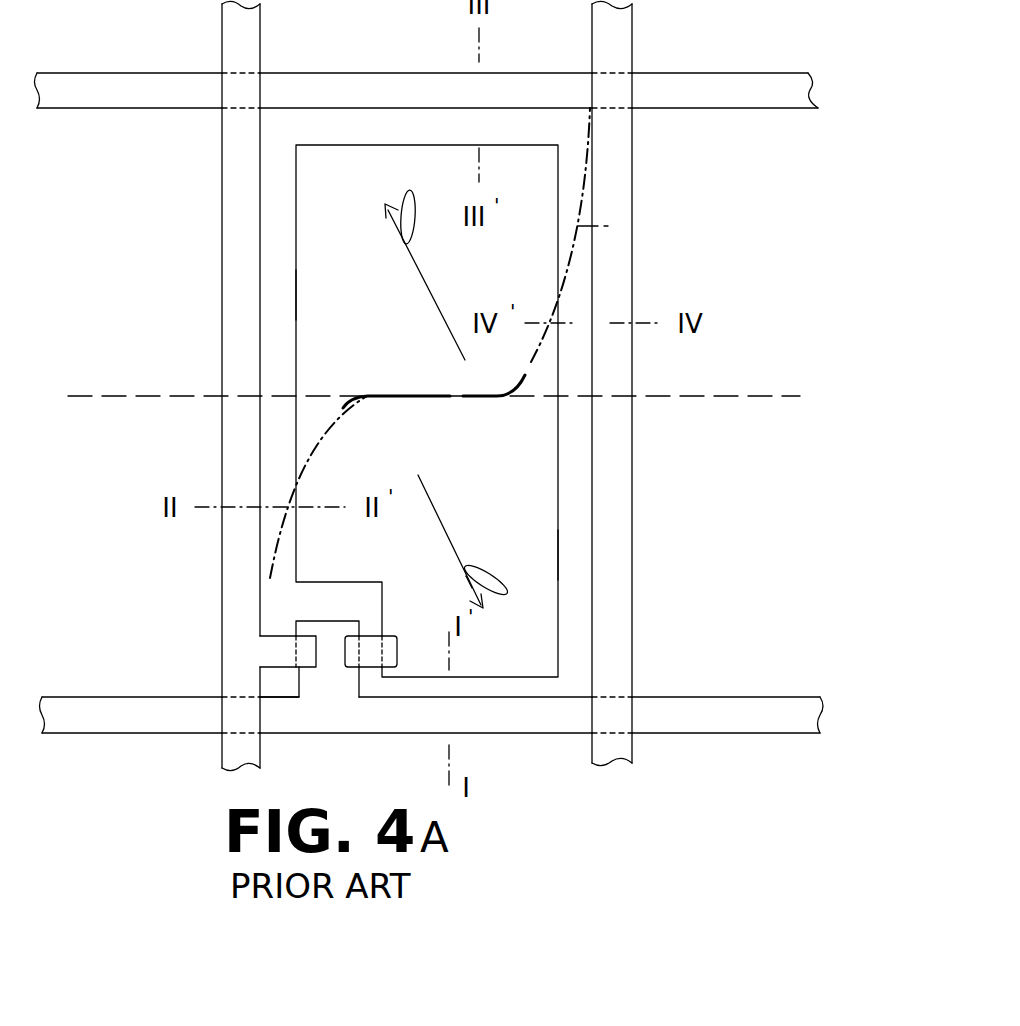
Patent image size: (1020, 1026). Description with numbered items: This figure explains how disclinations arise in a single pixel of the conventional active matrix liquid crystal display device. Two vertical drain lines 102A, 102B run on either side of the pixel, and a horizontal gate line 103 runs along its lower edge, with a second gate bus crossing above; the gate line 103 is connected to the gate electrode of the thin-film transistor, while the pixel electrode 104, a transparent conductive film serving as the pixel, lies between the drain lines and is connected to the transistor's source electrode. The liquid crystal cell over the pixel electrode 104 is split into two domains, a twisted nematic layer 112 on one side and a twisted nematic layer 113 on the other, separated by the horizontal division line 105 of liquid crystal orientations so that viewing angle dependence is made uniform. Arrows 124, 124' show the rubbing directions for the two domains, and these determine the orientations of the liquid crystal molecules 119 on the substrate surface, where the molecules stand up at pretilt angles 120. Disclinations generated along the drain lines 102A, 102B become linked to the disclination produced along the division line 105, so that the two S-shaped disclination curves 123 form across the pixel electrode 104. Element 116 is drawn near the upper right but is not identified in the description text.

The drain line 102A is at (224, 763).
The drain line 102B is at (633, 750).
The gate line 103 is at (107, 705).
The pixel electrode 104 is at (347, 165).
The division line 105 is at (746, 399).
The twisted nematic layer 112 is at (313, 295).
The twisted nematic layer 113 is at (549, 554).
The disclination line 116 is at (612, 222).
The liquid crystal molecules 119 is at (500, 578).
The pretilt angle 120 is at (467, 577).
The disclination curve 123 is at (540, 350).
The rubbing direction 124 is at (470, 541).
The rubbing direction 124' is at (413, 275).